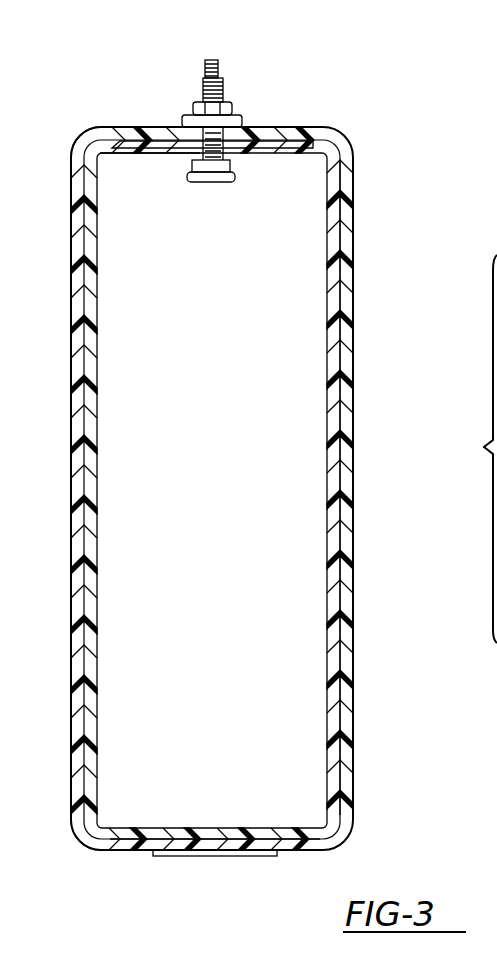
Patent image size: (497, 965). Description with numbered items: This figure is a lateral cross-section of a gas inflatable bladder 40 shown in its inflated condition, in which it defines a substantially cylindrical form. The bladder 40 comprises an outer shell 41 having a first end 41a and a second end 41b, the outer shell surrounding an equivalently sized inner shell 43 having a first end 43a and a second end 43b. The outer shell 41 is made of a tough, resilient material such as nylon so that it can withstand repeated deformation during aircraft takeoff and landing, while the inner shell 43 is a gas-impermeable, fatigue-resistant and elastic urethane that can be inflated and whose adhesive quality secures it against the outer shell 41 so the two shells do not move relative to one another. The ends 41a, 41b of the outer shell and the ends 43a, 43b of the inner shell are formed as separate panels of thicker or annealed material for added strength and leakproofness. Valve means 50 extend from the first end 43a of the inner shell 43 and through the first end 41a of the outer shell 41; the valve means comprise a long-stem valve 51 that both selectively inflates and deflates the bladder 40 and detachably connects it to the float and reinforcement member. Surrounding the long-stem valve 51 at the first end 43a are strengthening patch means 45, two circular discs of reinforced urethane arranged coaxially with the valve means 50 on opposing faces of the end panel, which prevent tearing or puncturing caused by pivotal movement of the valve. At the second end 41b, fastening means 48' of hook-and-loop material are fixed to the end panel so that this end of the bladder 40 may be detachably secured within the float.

The gas inflatable bladder 40 is at (372, 583).
The outer shell 41 is at (72, 398).
The first end of outer shell 41a is at (140, 113).
The second end of outer shell 41b is at (145, 872).
The inner shell 43 is at (336, 352).
The first end of inner shell 43a is at (287, 153).
The second end of inner shell 43b is at (168, 823).
The strengthening patch means 45 is at (145, 158).
The fastening means 48' is at (219, 893).
The valve means 50 is at (265, 143).
The long-stem valve 51 is at (203, 75).